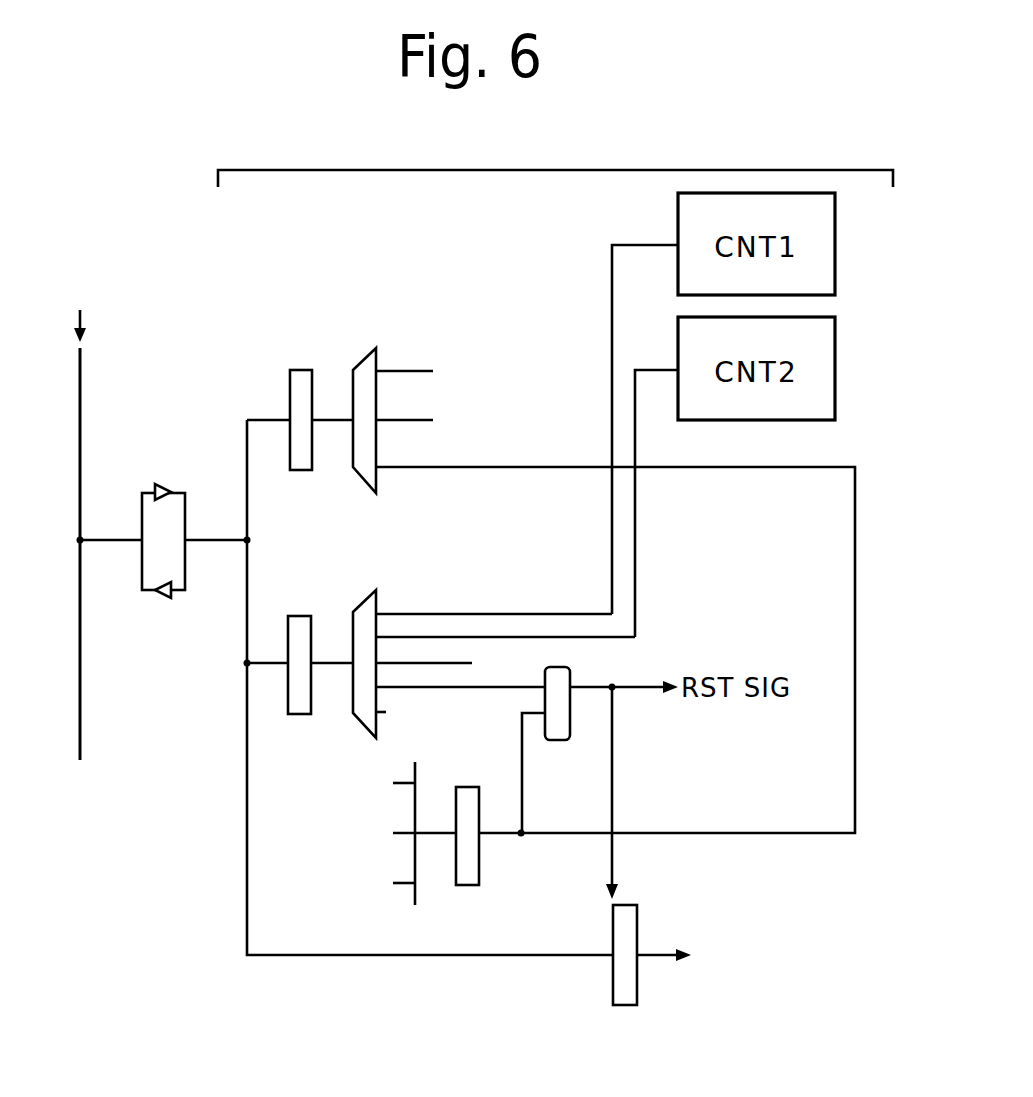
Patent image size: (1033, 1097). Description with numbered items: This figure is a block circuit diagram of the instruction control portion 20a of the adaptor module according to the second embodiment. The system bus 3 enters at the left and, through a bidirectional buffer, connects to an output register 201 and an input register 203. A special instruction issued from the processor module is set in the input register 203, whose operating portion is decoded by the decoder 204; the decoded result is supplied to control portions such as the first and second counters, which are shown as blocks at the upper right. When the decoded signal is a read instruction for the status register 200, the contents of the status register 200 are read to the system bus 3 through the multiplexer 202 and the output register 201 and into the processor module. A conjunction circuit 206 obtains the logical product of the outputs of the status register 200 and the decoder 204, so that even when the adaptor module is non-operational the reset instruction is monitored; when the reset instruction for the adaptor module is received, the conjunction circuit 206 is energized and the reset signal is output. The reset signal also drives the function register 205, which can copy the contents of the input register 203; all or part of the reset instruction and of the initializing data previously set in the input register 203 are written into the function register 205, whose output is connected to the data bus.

The system bus 3 is at (80, 748).
The instruction control portion 20a is at (870, 168).
The status register 200 is at (470, 787).
The output register 201 is at (293, 470).
The multiplexer 202 is at (375, 350).
The input register 203 is at (298, 616).
The decoder 204 is at (366, 730).
The function register 205 is at (625, 905).
The conjunction circuit 206 is at (560, 740).